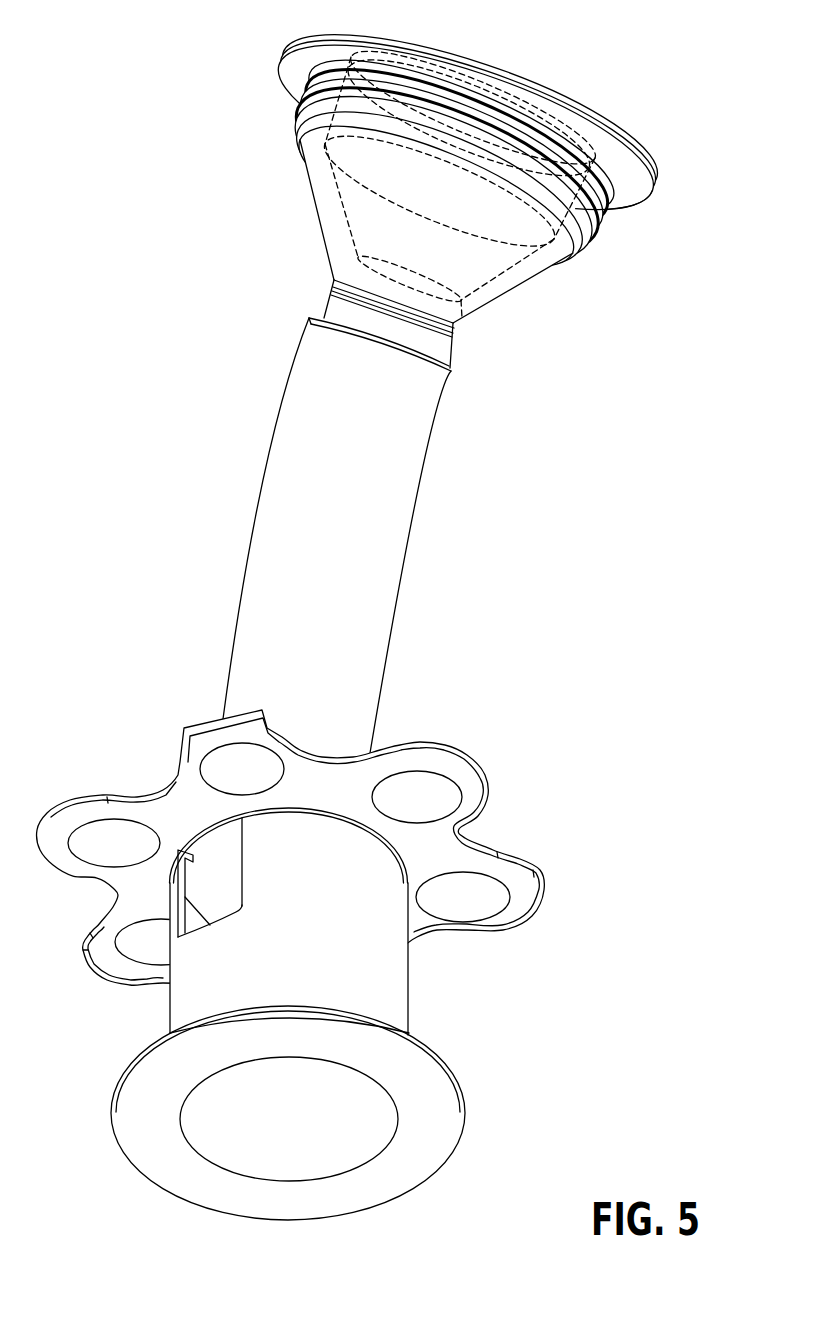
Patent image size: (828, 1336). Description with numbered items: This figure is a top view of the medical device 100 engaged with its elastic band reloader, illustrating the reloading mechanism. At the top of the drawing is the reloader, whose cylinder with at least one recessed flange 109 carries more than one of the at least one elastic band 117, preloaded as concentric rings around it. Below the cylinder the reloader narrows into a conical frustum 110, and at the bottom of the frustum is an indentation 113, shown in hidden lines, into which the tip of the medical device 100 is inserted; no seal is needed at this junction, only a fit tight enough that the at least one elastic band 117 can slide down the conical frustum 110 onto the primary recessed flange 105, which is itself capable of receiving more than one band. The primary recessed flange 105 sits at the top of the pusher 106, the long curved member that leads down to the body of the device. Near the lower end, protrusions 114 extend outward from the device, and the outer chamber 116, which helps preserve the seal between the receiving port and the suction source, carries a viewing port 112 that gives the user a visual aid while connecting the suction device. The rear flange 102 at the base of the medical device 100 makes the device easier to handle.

The medical device 100 is at (365, 611).
The rear flange 102 is at (465, 1086).
The primary recessed flange 105 is at (453, 336).
The pusher 106 is at (411, 529).
The cylinder with at least one recessed flange 109 is at (603, 214).
The conical frustum 110 is at (316, 212).
The viewing port 112 is at (178, 914).
The indentation 113 is at (342, 265).
The protrusions 114 is at (64, 801).
The outer chamber 116 is at (409, 977).
The at least one elastic band 117 is at (302, 88).